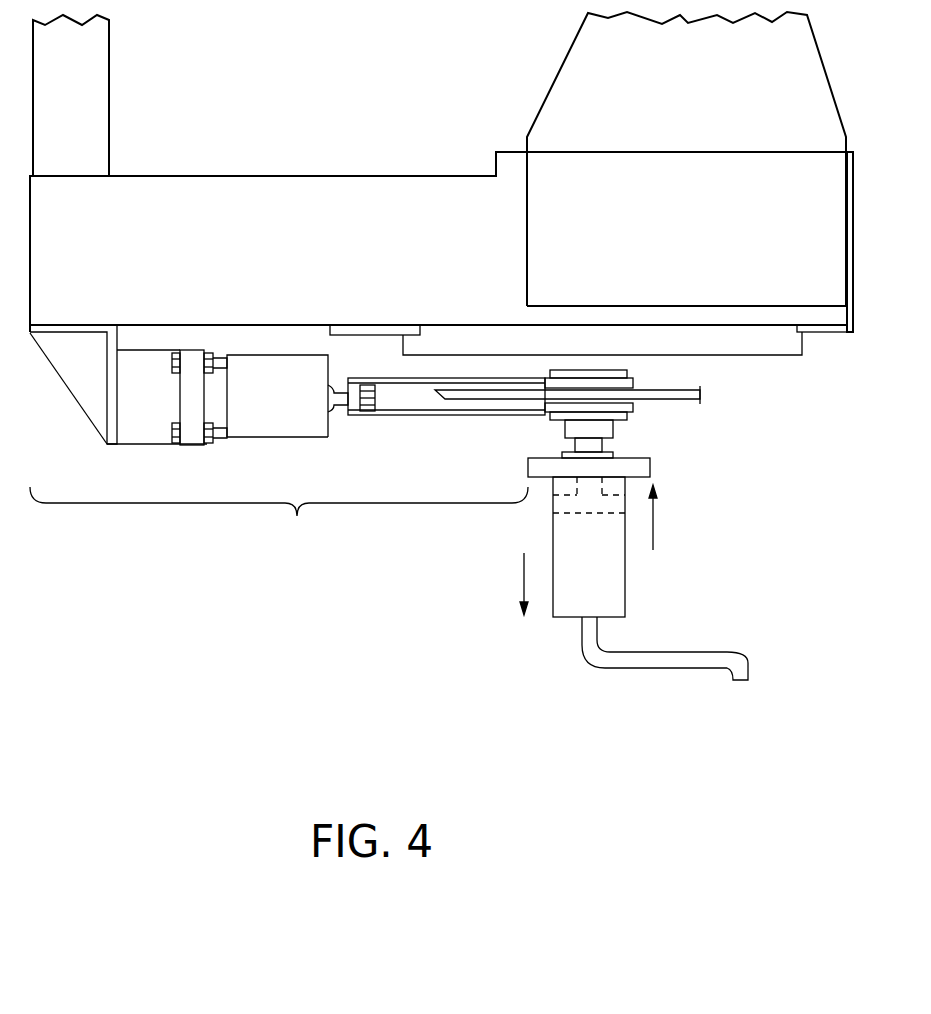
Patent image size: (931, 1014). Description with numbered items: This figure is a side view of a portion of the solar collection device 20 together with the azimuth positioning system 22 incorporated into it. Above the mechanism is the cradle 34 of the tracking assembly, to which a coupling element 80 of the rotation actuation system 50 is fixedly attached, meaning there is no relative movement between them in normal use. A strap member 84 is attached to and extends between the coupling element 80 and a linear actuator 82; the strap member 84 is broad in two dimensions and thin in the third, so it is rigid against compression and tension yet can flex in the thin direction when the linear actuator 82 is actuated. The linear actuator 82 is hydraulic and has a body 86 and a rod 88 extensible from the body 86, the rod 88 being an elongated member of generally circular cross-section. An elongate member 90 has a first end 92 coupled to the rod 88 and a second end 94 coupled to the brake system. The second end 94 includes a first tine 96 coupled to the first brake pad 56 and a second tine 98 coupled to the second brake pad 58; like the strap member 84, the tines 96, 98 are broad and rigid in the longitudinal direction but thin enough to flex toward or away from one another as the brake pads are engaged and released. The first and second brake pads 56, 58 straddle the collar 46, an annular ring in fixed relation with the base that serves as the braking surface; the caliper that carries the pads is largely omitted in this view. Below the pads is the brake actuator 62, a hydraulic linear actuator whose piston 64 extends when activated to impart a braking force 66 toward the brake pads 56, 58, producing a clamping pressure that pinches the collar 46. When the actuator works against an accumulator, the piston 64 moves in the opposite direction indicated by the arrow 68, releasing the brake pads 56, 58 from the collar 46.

The solar collection device 20 is at (153, 629).
The positioning system 22 is at (770, 522).
The cradle 34 is at (303, 180).
The collar 46 is at (702, 398).
The rotation actuation system 50 is at (279, 522).
The first brake pad 56 is at (633, 386).
The second brake pad 58 is at (633, 405).
The brake actuator 62 is at (625, 597).
The piston 64 is at (553, 504).
The braking force 66 is at (654, 520).
The arrow 68 is at (524, 586).
The coupling element 80 is at (70, 378).
The linear actuator 82 is at (247, 437).
The strap member 84 is at (147, 434).
The body 86 is at (297, 426).
The rod 88 is at (337, 399).
The elongate member 90 is at (403, 418).
The first end 92 is at (355, 410).
The second end 94 is at (512, 418).
The first tine 96 is at (452, 378).
The second tine 98 is at (455, 418).